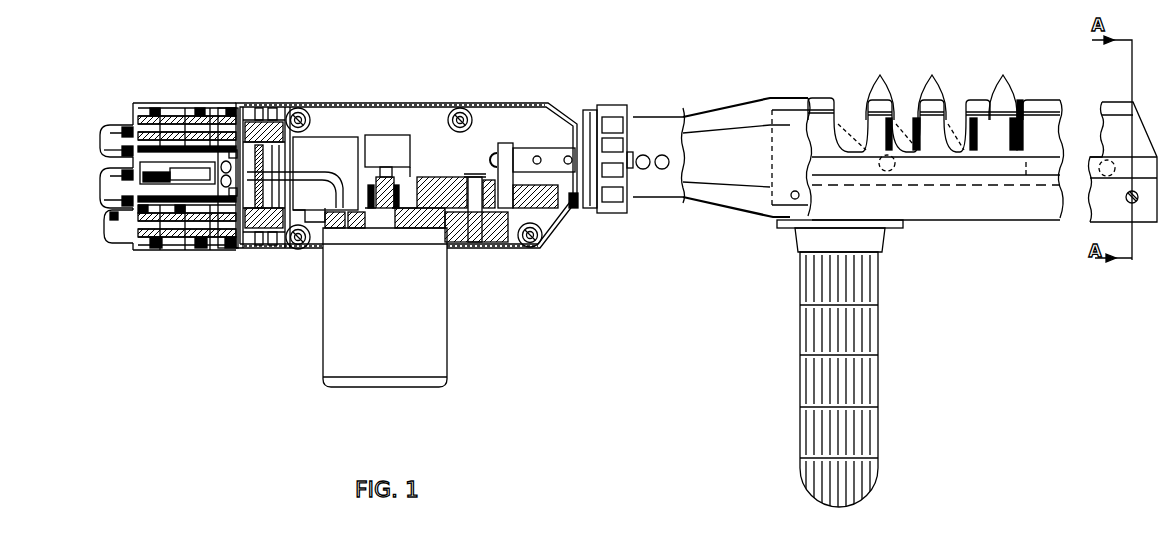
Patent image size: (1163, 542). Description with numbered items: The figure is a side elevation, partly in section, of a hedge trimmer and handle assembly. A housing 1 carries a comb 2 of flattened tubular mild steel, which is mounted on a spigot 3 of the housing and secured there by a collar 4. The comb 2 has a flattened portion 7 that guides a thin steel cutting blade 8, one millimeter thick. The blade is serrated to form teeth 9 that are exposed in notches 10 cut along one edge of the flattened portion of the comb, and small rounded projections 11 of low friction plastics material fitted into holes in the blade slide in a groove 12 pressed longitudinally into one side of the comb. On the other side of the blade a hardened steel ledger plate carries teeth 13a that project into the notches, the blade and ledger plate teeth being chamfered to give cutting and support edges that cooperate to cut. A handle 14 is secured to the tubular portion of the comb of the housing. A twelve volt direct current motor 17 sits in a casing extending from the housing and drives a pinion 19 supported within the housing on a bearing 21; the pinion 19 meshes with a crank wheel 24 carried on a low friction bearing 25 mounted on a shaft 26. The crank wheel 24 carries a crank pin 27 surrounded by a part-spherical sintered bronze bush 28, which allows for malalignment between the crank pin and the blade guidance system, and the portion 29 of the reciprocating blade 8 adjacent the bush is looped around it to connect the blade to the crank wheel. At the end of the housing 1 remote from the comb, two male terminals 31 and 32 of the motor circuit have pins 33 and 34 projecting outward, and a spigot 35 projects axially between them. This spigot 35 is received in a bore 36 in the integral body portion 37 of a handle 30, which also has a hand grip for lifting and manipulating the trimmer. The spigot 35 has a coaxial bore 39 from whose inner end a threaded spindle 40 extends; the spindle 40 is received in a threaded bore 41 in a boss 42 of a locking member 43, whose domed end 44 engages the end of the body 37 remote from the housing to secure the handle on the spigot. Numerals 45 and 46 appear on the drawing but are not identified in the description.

The housing 1 is at (527, 103).
The comb 2 is at (1040, 108).
The spigot 3 is at (577, 210).
The collar 4 is at (615, 105).
The flattened portion 7 is at (813, 117).
The cutting blade 8 is at (712, 150).
The teeth 9 is at (858, 130).
The notches 10 is at (903, 122).
The rounded projections 11 is at (890, 171).
The groove 12 is at (1026, 178).
The ledger plate teeth 13a is at (880, 85).
The handle 14 is at (855, 380).
The motor 17 is at (430, 332).
The pinion 19 is at (365, 195).
The bearing 21 is at (372, 167).
The crank wheel 24 is at (433, 190).
The low friction bearing 25 is at (475, 193).
The shaft 26 is at (502, 242).
The crank pin 27 is at (488, 153).
The part-spherical sintered bronze bush 28 is at (522, 143).
The portion of the cutting blade 29 is at (543, 147).
The handle 30 is at (126, 277).
The male terminal 31 is at (247, 118).
The male terminal 32 is at (283, 242).
The pin 33 is at (217, 137).
The pin 34 is at (227, 243).
The spigot 35 is at (163, 137).
The bore 36 is at (135, 230).
The body portion 37 is at (153, 250).
The coaxial bore 39 is at (167, 178).
The threaded spindle 40 is at (165, 125).
The threaded bore 41 is at (86, 172).
The boss 42 is at (102, 192).
The locking member 43 is at (92, 157).
The domed end 44 is at (95, 133).
The upper insulator 45 is at (193, 123).
The lower insulator 46 is at (195, 227).